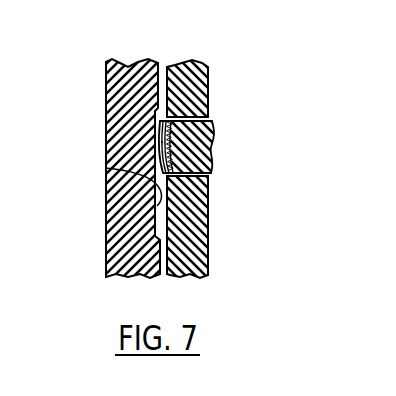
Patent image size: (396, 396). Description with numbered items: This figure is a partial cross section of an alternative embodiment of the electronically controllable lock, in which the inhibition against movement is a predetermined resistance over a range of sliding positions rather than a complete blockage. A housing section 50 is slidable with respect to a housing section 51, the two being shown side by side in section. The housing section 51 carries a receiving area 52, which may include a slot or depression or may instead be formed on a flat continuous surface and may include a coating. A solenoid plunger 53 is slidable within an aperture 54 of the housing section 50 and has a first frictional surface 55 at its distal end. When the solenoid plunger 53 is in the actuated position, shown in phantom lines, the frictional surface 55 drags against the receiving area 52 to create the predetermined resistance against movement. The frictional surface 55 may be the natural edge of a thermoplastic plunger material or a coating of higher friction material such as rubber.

The housing section 50 is at (207, 219).
The housing section 51 is at (108, 212).
The receiving area 52 is at (105, 168).
The solenoid plunger 53 is at (214, 146).
The aperture 54 is at (198, 102).
The first frictional surface 55 is at (173, 160).